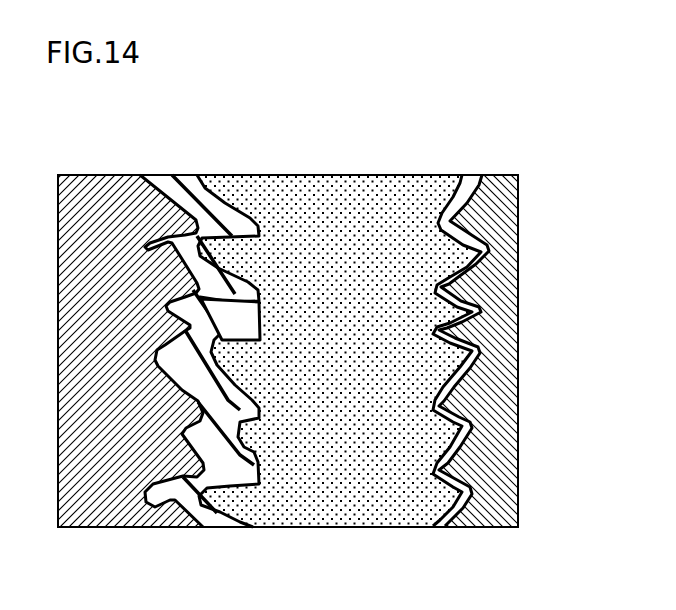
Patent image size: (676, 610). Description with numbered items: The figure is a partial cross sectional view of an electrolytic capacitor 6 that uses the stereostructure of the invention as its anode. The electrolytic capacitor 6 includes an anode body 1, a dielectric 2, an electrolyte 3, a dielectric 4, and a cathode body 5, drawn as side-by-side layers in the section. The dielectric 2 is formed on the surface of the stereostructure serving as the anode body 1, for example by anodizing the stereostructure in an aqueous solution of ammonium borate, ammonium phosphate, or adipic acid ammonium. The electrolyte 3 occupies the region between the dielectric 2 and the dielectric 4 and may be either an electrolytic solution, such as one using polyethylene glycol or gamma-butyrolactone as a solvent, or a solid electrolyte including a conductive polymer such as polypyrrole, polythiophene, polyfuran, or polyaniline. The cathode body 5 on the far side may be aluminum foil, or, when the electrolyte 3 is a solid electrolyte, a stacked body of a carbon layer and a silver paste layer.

The anode body 1 is at (96, 192).
The dielectric 2 is at (180, 192).
The electrolyte 3 is at (338, 193).
The dielectric 4 is at (467, 190).
The cathode body 5 is at (506, 190).
The electrolytic capacitor 6 is at (547, 131).